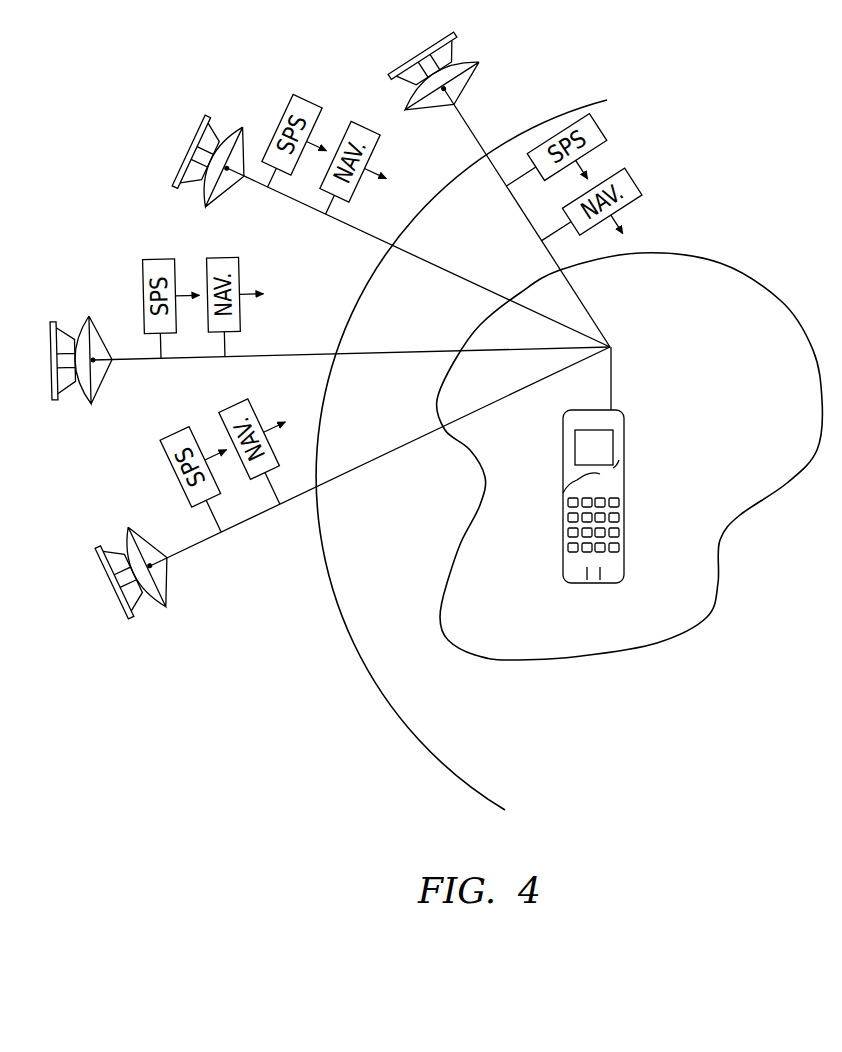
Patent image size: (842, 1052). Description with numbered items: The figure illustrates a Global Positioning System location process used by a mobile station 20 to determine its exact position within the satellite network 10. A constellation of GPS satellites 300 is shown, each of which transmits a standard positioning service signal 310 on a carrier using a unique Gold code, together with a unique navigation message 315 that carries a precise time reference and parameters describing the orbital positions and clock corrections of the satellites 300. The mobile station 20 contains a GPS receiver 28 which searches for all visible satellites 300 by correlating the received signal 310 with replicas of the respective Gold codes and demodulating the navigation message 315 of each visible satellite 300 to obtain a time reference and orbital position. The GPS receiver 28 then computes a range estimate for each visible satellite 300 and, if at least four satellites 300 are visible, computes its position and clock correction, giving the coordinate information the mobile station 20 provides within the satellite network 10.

The GPS satellite 300 is at (210, 118).
The standard positioning service (SPS) signal 310 is at (302, 95).
The navigation message 315 is at (378, 160).
The GPS receiver 28 is at (610, 452).
The mobile station (MS) 20 is at (565, 571).
The satellite network 10 is at (545, 662).